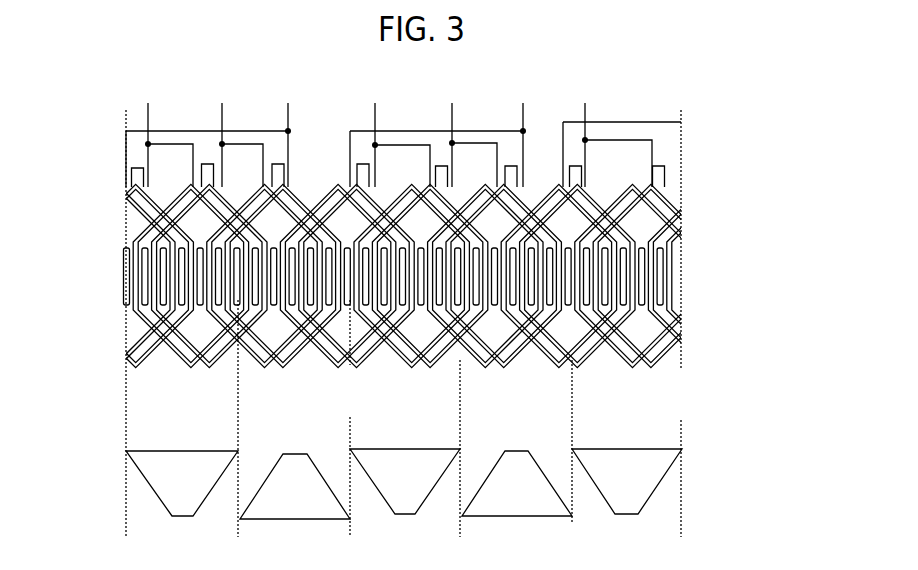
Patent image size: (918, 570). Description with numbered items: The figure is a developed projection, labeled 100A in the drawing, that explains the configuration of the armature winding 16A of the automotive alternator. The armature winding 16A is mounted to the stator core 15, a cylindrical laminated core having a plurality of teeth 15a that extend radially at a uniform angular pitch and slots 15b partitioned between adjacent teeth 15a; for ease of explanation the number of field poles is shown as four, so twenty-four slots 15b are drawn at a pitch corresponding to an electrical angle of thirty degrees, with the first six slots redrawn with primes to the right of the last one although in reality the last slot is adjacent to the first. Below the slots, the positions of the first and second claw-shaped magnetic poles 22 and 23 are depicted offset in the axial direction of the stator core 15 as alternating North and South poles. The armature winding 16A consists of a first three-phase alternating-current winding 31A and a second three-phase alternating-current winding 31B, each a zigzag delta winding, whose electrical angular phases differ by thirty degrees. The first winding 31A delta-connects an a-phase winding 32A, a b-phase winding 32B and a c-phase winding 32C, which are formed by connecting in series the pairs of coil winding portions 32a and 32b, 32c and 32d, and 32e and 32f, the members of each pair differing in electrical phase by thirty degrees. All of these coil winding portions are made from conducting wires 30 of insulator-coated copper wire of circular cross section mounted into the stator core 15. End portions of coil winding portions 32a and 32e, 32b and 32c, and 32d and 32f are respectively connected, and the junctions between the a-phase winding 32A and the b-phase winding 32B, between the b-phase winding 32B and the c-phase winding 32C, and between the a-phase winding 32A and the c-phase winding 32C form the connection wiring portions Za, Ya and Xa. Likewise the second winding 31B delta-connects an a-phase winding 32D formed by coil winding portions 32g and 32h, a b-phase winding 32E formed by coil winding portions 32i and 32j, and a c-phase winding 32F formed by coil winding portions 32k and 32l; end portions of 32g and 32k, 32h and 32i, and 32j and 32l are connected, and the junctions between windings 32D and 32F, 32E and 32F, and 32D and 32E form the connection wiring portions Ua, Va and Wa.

The motor 100A is at (95, 92).
The stator core 15 is at (125, 302).
The teeth 15a is at (125, 290).
The slots 15b is at (125, 252).
The armature winding 16A is at (600, 321).
The first claw-shaped magnetic poles 22 is at (167, 503).
The second claw-shaped magnetic poles 23 is at (262, 512).
The conducting wires 30 is at (333, 188).
The first three-phase alternating-current winding 31A is at (628, 323).
The second three-phase alternating-current winding 31B is at (226, 364).
The a-phase winding 32A is at (465, 410).
The b-phase winding 32B is at (645, 375).
The c-phase winding 32C is at (577, 410).
The a-phase winding 32D is at (320, 370).
The b-phase winding 32E is at (155, 380).
The c-phase winding 32F is at (280, 420).
The coil winding portion 32a is at (428, 364).
The coil winding portion 32b is at (400, 366).
The coil winding portion 32c is at (575, 362).
The coil winding portion 32d is at (574, 363).
The coil winding portion 32e is at (462, 362).
The coil winding portion 32f is at (508, 362).
The coil winding portion 32g is at (383, 372).
The coil winding portion 32h is at (372, 362).
The coil winding portion 32i is at (137, 347).
The coil winding portion 32j is at (120, 322).
The coil winding portion 32k is at (232, 376).
The coil winding portion 32l is at (256, 376).
The connection wiring portion Wa is at (150, 142).
The connection wiring portion Va is at (224, 142).
The connection wiring portion Ua is at (291, 129).
The connection wiring portion Za is at (377, 143).
The connection wiring portion Ya is at (455, 141).
The connection wiring portion Xa is at (526, 130).